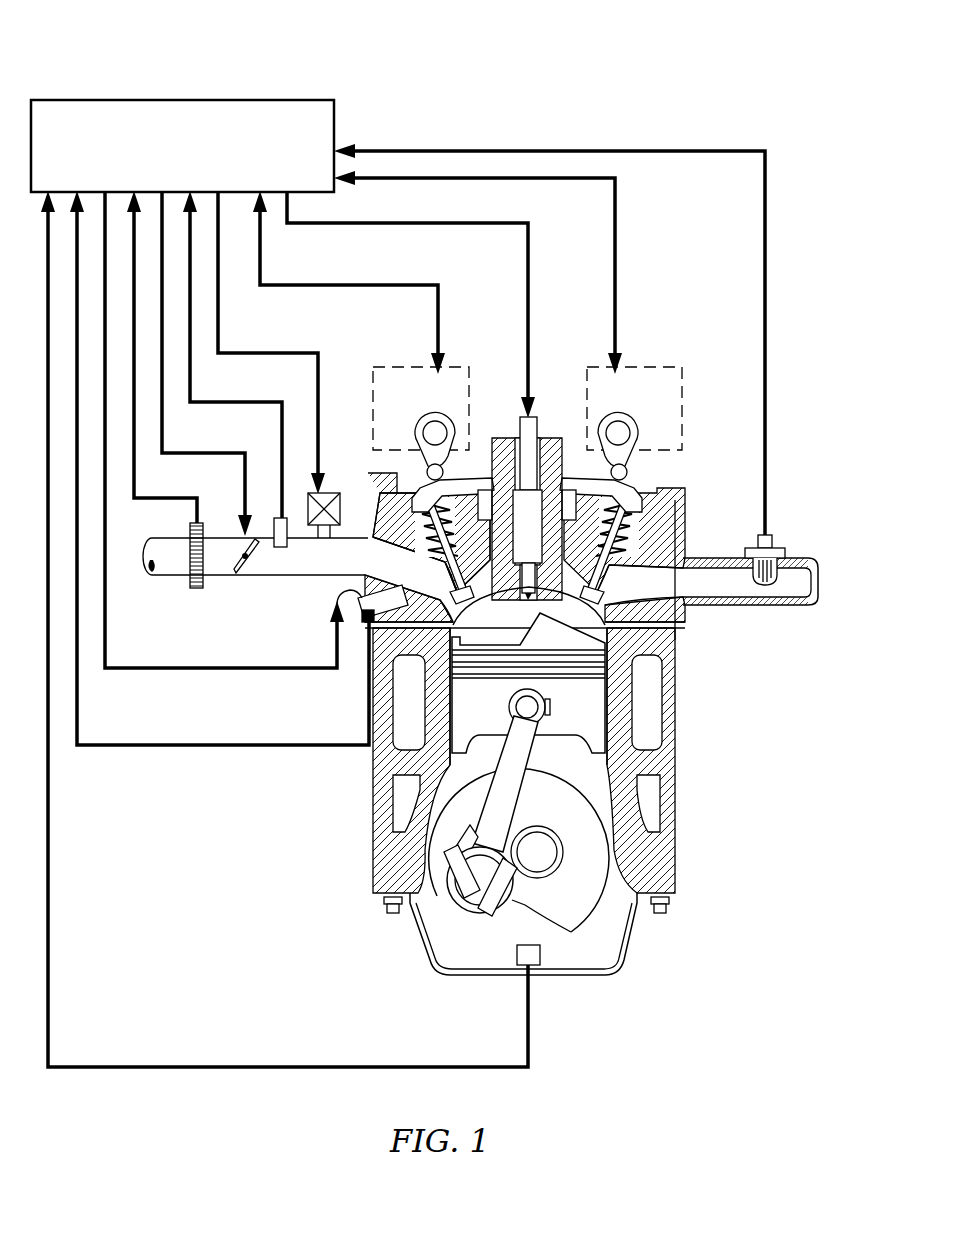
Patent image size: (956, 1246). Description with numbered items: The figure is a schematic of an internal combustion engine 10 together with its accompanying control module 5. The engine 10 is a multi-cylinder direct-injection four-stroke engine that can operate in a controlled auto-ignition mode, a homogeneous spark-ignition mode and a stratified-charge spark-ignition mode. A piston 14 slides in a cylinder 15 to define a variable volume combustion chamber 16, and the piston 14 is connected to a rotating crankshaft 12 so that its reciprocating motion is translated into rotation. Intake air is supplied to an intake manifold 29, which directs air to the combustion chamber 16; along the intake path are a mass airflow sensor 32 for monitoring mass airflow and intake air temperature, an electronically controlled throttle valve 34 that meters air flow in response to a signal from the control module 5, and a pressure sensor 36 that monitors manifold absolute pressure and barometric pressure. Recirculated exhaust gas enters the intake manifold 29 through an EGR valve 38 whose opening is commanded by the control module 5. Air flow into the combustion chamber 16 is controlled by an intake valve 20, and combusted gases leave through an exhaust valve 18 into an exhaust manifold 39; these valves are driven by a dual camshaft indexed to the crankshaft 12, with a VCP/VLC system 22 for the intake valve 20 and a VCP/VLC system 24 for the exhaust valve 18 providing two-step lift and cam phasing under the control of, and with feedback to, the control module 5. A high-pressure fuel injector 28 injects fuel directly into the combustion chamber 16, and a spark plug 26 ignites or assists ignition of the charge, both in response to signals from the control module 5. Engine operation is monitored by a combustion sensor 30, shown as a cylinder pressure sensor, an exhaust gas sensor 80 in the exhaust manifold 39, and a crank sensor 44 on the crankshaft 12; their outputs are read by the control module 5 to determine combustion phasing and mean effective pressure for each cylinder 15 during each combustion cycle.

The control module 5 is at (291, 98).
The internal combustion engine 10 is at (679, 758).
The crankshaft 12 is at (548, 907).
The piston 14 is at (528, 683).
The cylinder 15 is at (611, 643).
The combustion chamber 16 is at (529, 611).
The exhaust valve 18 is at (595, 597).
The intake valve 20 is at (455, 596).
The VCP/VLC system 22 is at (463, 375).
The VCP/VLC system 24 is at (672, 440).
The spark plug 26 is at (533, 425).
The fuel injector 28 is at (337, 622).
The intake manifold 29 is at (349, 540).
The combustion sensor 30 is at (368, 674).
The mass airflow sensor 32 is at (197, 588).
The throttle valve 34 is at (240, 573).
The pressure sensor 36 is at (281, 547).
The EGR valve 38 is at (325, 538).
The exhaust manifold 39 is at (665, 577).
The crankshaft rotational speed sensor 44 is at (517, 963).
The exhaust gas sensor 80 is at (768, 545).